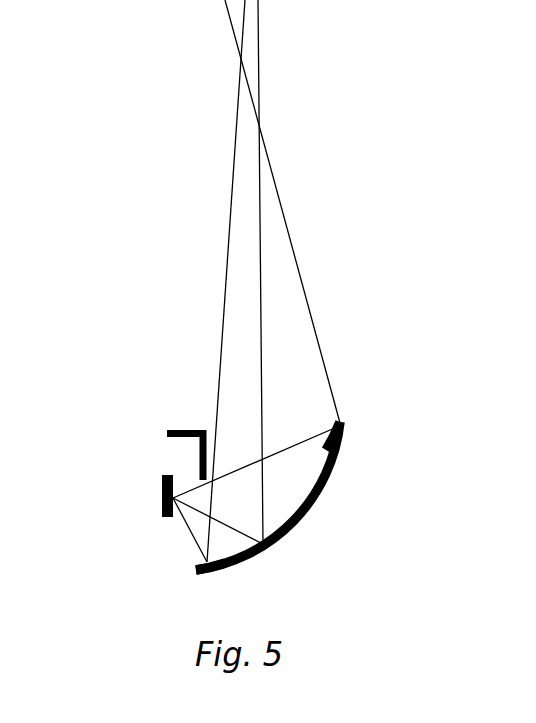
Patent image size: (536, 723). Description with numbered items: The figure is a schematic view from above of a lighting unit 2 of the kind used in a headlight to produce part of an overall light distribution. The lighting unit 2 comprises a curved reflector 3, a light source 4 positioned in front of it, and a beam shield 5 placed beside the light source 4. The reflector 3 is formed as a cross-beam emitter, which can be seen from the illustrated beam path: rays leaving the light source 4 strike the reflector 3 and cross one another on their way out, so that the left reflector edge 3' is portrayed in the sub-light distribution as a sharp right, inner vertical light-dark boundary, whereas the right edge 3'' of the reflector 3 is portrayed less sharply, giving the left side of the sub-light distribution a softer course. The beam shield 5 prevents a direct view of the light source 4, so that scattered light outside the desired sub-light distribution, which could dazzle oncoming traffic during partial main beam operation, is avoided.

The lighting unit 2 is at (113, 359).
The reflector 3 is at (314, 496).
The reflector edge 3' is at (154, 598).
The right edge of the reflector 3'' is at (370, 392).
The light source 4 is at (162, 490).
The beam shield 5 is at (197, 457).